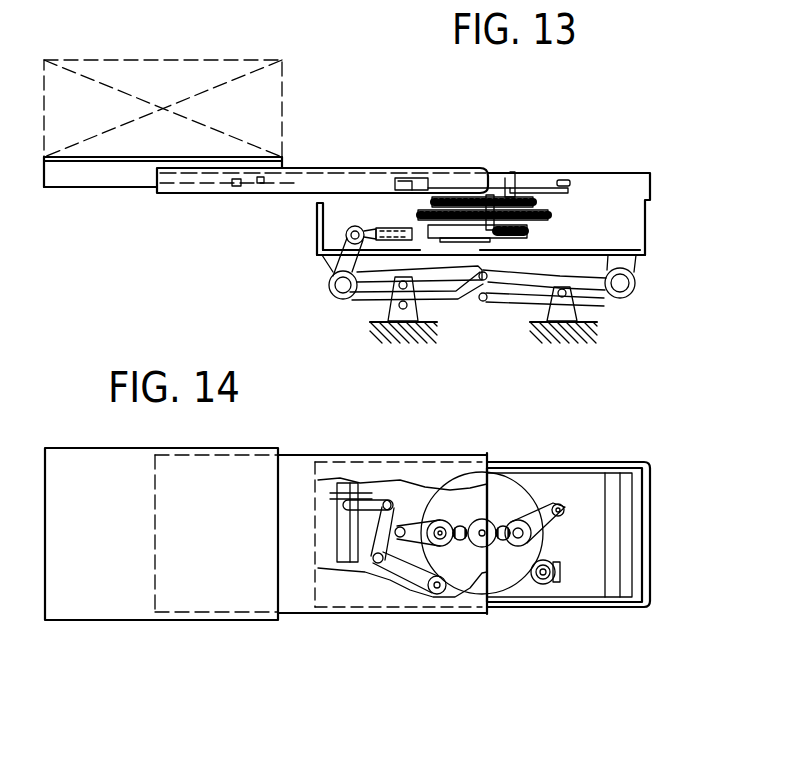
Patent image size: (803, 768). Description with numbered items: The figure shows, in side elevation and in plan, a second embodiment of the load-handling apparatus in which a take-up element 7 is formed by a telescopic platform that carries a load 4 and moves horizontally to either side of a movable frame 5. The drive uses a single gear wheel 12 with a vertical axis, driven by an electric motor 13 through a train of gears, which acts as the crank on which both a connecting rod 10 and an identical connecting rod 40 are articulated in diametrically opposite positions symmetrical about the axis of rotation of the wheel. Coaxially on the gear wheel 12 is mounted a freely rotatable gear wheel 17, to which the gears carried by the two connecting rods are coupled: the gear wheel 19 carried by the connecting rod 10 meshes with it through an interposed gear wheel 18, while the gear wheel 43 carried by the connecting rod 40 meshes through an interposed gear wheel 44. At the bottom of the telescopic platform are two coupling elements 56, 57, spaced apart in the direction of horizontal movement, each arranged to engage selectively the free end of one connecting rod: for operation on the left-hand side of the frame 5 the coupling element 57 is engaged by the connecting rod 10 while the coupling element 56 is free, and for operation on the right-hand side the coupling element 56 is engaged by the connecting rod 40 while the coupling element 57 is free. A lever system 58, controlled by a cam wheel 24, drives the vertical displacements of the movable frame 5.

In FIG. 13, the load / container 4 is at (272, 83).
In FIG. 14, the movable frame 5 is at (653, 448).
In FIG. 13, the take-up element 7 is at (312, 150).
In FIG. 14, the take-up element 7 is at (245, 626).
In FIG. 14, the connecting rod 10 is at (413, 530).
In FIG. 13, the gear wheel 12 is at (550, 215).
In FIG. 14, the gear wheel 12 is at (498, 482).
In FIG. 14, the electric motor 13 is at (549, 585).
In FIG. 13, the gear wheel 17 is at (493, 200).
In FIG. 14, the gear wheel 17 is at (484, 548).
In FIG. 13, the gear wheel 18 is at (467, 199).
In FIG. 14, the gear wheel 18 is at (455, 527).
In FIG. 13, the gear wheel 19 is at (430, 198).
In FIG. 13, the cam wheel 24 is at (527, 232).
In FIG. 14, the connecting rod 40 is at (545, 503).
In FIG. 13, the gear wheel 43 is at (568, 193).
In FIG. 13, the gear wheel 44 is at (564, 183).
In FIG. 14, the gear wheel 44 is at (504, 526).
In FIG. 13, the coupling element 56 is at (236, 186).
In FIG. 13, the coupling element 57 is at (413, 180).
In FIG. 13, the lever system 58 is at (481, 320).
In FIG. 14, the lever system 58 is at (367, 618).